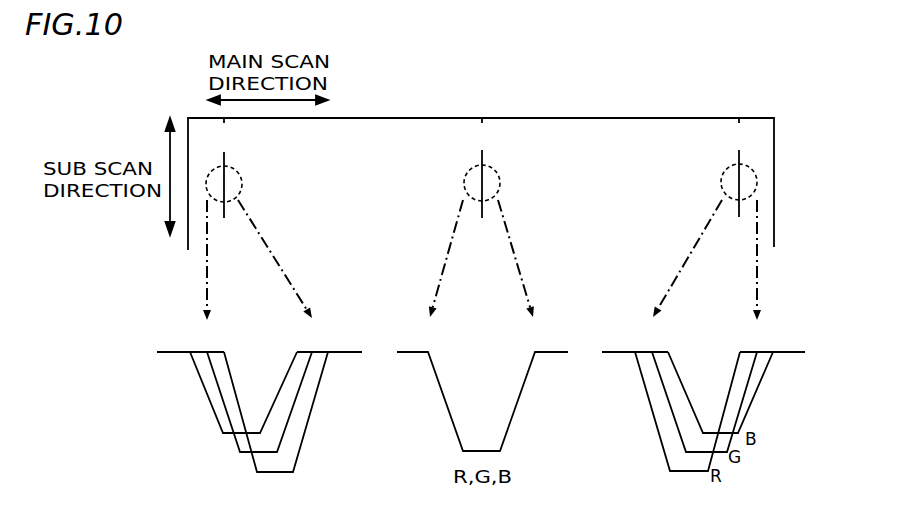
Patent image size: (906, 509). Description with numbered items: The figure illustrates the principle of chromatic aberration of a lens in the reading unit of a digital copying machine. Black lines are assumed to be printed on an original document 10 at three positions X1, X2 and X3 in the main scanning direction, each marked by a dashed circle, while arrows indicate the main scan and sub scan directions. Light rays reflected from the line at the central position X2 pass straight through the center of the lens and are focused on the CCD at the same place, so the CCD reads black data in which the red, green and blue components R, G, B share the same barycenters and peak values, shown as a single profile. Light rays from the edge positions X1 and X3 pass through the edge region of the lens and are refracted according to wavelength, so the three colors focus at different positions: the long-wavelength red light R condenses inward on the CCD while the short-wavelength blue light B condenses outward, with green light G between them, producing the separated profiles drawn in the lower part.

The original document 10 is at (385, 117).
The position x1 X1 is at (224, 172).
The position x2 X2 is at (482, 171).
The position x3 X3 is at (739, 170).
The blue light B is at (243, 401).
The green light G is at (259, 410).
The red light R is at (276, 420).